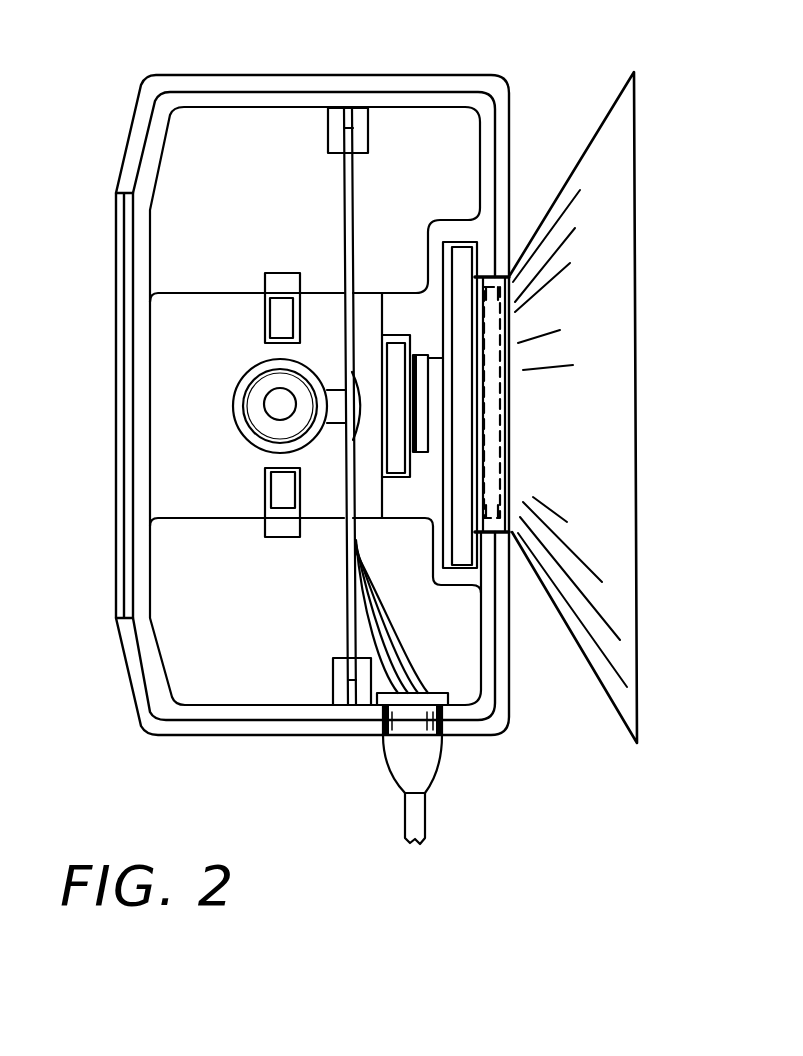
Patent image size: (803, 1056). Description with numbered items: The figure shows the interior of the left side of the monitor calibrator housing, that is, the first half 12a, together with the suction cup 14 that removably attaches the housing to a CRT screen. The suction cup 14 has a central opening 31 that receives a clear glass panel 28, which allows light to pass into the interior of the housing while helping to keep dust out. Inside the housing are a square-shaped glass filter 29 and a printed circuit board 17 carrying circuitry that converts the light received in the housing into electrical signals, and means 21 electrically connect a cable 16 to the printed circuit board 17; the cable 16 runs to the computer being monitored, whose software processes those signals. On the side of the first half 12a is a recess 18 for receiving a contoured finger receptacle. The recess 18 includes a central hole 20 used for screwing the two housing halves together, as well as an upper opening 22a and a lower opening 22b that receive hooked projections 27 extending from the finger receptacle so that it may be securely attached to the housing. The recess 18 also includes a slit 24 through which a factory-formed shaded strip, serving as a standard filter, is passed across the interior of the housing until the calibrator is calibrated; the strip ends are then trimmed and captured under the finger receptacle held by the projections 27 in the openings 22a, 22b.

The first half 12a is at (437, 74).
The suction cup 14 is at (637, 288).
The cable 16 is at (425, 810).
The printed circuit board 17 is at (347, 533).
The recess 18 is at (177, 388).
The central hole 20 is at (268, 405).
The means for electrically connecting 21 is at (402, 628).
The upper opening 22a is at (300, 318).
The lower opening 22b is at (268, 490).
The slit 24 is at (423, 357).
The hooked projections 27 is at (270, 322).
The clear glass panel 28 is at (518, 308).
The square-shaped glass filter 29 is at (398, 480).
The central opening 31 is at (445, 523).